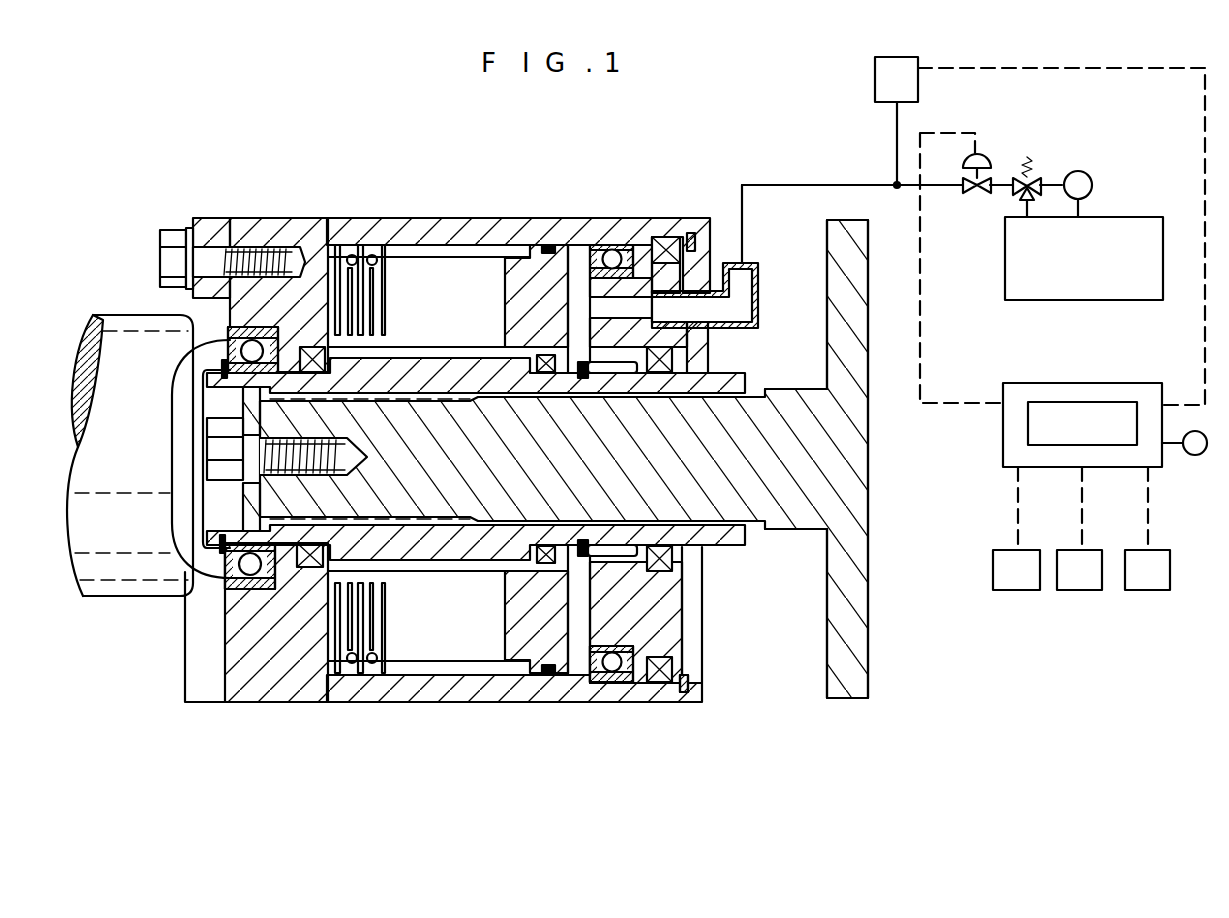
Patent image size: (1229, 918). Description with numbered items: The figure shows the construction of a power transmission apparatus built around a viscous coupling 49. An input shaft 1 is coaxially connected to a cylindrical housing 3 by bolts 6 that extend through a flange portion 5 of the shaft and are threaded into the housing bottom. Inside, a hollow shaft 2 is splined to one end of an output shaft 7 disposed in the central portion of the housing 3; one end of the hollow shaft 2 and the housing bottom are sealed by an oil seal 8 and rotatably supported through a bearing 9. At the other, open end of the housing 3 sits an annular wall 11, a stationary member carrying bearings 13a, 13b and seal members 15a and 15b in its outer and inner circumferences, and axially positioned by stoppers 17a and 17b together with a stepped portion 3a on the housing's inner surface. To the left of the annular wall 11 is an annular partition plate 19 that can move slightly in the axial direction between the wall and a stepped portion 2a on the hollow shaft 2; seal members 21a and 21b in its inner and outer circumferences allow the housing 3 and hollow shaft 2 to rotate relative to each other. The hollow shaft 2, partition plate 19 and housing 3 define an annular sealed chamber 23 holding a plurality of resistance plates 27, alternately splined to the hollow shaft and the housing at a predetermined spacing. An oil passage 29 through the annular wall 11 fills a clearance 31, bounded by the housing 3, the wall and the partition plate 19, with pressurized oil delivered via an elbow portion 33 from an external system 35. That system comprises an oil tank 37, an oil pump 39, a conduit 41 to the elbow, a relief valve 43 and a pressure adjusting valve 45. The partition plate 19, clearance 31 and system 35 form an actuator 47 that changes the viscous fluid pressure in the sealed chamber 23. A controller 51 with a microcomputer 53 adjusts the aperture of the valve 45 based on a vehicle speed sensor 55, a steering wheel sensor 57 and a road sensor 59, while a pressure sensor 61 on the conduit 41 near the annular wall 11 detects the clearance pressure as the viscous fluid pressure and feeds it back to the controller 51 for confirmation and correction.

The input shaft 1 is at (107, 327).
The hollow shaft 2 is at (467, 366).
The stepped portion 2a is at (540, 676).
The housing 3 is at (410, 217).
The stepped portion 3a is at (603, 217).
The flange portion 5 is at (223, 233).
The bolts 6 is at (176, 230).
The output shaft 7 is at (799, 525).
The oil seal 8 is at (315, 343).
The bearing 9 is at (228, 336).
The annular wall 11 is at (672, 648).
The bearing 13a is at (620, 247).
The bearing 13b is at (595, 248).
The seal member 15a is at (665, 245).
The seal member 15b is at (672, 359).
The stopper 17a is at (693, 233).
The stopper 17b is at (643, 612).
The annular partition plate 19 is at (545, 355).
The seal member 21a is at (548, 245).
The seal member 21b is at (520, 250).
The annular sealed chamber 23 is at (425, 262).
The resistance plates 27 is at (390, 276).
The oil passage 29 is at (640, 307).
The clearance 31 is at (578, 672).
The elbow portion 33 is at (745, 303).
The external system 35 is at (1047, 153).
The oil tank 37 is at (1142, 217).
The oil pump 39 is at (1090, 173).
The conduit 41 is at (862, 185).
The relief valve 43 is at (1015, 193).
The pressure adjusting valve 45 is at (977, 153).
The actuator 47 is at (778, 165).
The viscous coupling 49 is at (477, 168).
The controller 51 is at (1072, 392).
The microcomputer 53 is at (1108, 417).
The vehicle speed sensor 55 is at (1017, 590).
The steering wheel sensor 57 is at (1082, 590).
The road sensor 59 is at (1148, 590).
The pressure sensor 61 is at (875, 78).